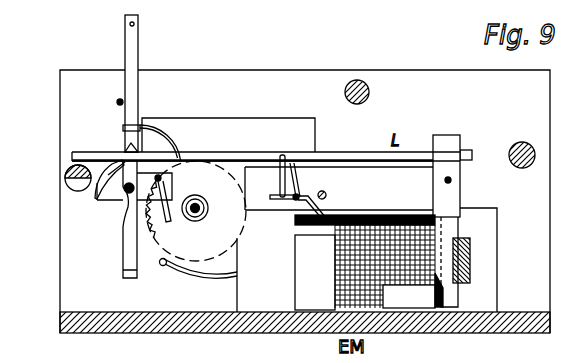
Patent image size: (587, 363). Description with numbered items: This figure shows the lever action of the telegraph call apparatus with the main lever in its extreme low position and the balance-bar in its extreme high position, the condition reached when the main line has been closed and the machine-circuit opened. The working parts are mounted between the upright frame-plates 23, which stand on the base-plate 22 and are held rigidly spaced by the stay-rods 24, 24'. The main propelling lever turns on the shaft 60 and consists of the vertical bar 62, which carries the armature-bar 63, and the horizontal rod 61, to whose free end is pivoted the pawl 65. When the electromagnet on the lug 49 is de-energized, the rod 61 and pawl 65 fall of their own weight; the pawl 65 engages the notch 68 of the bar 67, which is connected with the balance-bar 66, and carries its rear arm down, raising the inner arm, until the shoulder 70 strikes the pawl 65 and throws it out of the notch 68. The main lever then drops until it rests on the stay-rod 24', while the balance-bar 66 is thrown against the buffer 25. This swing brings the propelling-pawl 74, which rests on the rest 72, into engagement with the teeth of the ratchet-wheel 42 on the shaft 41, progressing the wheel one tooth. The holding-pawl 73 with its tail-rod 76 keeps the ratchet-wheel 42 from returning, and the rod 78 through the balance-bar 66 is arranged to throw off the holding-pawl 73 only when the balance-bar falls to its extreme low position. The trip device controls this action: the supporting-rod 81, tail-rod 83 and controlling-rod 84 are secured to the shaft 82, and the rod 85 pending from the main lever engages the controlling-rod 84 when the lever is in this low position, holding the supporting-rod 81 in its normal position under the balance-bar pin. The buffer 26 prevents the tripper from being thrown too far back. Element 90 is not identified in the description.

The base-plate 22 is at (305, 333).
The frame-plate 23 is at (305, 193).
The stay-rod 24 is at (524, 146).
The stay-rod 24' is at (54, 178).
The buffer 25 is at (108, 102).
The buffer 26 is at (326, 193).
The shaft 41 is at (209, 209).
The ratchet-wheel 42 is at (196, 211).
The lug 49 is at (369, 262).
The shaft 60 is at (462, 181).
The horizontal rod 61 is at (272, 172).
The vertical bar 62 is at (459, 201).
The armature-bar 63 is at (470, 262).
The pawl 65 is at (122, 150).
The balance-bar 66 is at (140, 54).
The bar 67 is at (124, 238).
The notch 68 is at (118, 190).
The shoulder 70 is at (95, 200).
The rest 72 is at (163, 224).
The holding-pawl 73 is at (161, 266).
The propelling-pawl 74 is at (162, 193).
The tail-rod 76 is at (200, 275).
The rod 78 is at (172, 145).
The supporting-rod 81 is at (300, 176).
The shaft 82 is at (300, 194).
The tail-rod 83 is at (330, 202).
The controlling-rod 84 is at (283, 204).
The rod 85 is at (274, 176).
The pivot 90 is at (162, 180).